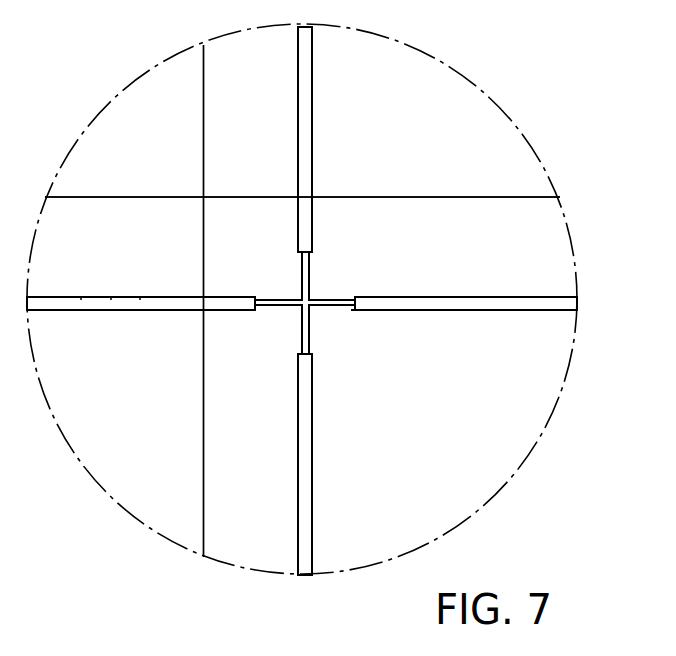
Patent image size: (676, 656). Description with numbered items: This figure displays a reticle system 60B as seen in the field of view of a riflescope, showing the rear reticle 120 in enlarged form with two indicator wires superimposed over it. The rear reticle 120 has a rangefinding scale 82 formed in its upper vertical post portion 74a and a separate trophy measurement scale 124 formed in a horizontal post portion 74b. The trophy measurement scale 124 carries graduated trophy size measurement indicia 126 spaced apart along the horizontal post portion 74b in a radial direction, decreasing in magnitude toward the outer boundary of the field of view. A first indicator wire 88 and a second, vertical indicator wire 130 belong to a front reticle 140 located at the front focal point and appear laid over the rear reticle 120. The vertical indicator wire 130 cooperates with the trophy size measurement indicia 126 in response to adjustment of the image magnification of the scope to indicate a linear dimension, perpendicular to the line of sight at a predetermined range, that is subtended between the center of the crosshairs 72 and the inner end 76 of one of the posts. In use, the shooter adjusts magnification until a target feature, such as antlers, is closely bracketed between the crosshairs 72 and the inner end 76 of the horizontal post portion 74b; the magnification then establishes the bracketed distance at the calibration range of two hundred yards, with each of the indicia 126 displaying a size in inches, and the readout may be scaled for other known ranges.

The reticle system 60B is at (521, 96).
The crosshairs 72 is at (331, 282).
The upper vertical post portion 74a is at (313, 223).
The horizontal post portion 74b is at (238, 312).
The inner end 76 is at (300, 256).
The rangefinding scale 82 is at (325, 129).
The first indicator wire 88 is at (478, 197).
The rear reticle 120 is at (541, 263).
The trophy measurement scale 124 is at (122, 340).
The trophy size measurement indicia 126 is at (140, 297).
The second indicator wire 130 is at (204, 447).
The front reticle 140 is at (182, 135).